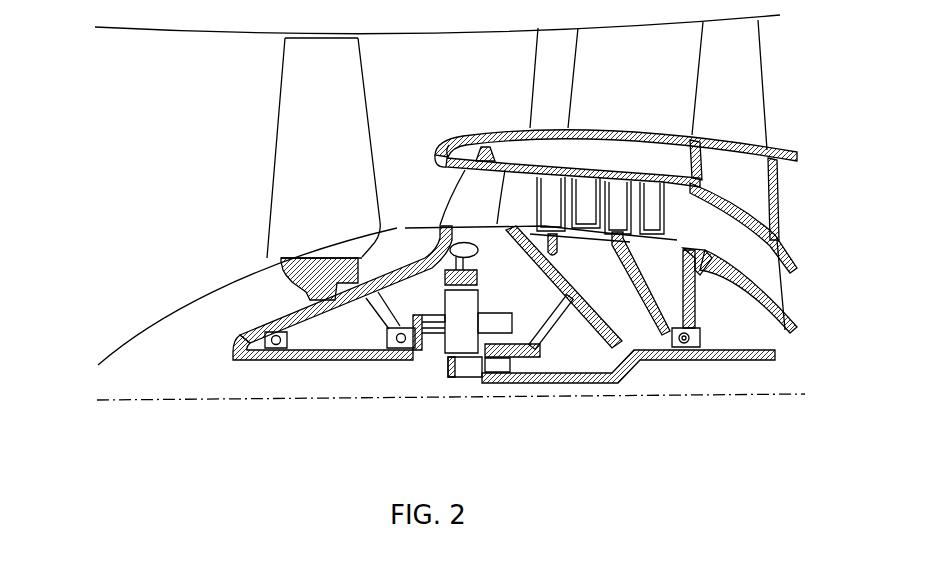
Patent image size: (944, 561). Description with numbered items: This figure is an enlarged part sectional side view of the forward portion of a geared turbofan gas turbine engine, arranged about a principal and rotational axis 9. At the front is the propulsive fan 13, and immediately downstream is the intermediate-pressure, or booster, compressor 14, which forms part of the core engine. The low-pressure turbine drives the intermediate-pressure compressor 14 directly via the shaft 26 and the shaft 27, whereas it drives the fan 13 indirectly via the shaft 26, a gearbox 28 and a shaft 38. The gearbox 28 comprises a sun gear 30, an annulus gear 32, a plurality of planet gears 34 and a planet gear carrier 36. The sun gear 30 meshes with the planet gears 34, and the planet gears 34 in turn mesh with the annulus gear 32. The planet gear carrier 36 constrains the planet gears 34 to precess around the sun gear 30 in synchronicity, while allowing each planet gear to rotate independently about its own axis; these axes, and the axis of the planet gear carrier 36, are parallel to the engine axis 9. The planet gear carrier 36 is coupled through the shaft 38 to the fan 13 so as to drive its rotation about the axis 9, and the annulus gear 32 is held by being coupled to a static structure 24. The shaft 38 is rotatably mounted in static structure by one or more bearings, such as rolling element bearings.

The rotational axis 9 is at (233, 400).
The propulsive fan 13 is at (293, 122).
The intermediate-pressure compressor 14 is at (618, 197).
The static structure 24 is at (473, 200).
The shaft 26 is at (673, 363).
The shaft 27 is at (640, 293).
The gearbox 28 is at (438, 343).
The sun gear 30 is at (463, 370).
The annulus gear 32 is at (477, 278).
The planet gears 34 is at (463, 323).
The planet gear carrier 36 is at (430, 335).
The shaft 38 is at (300, 363).